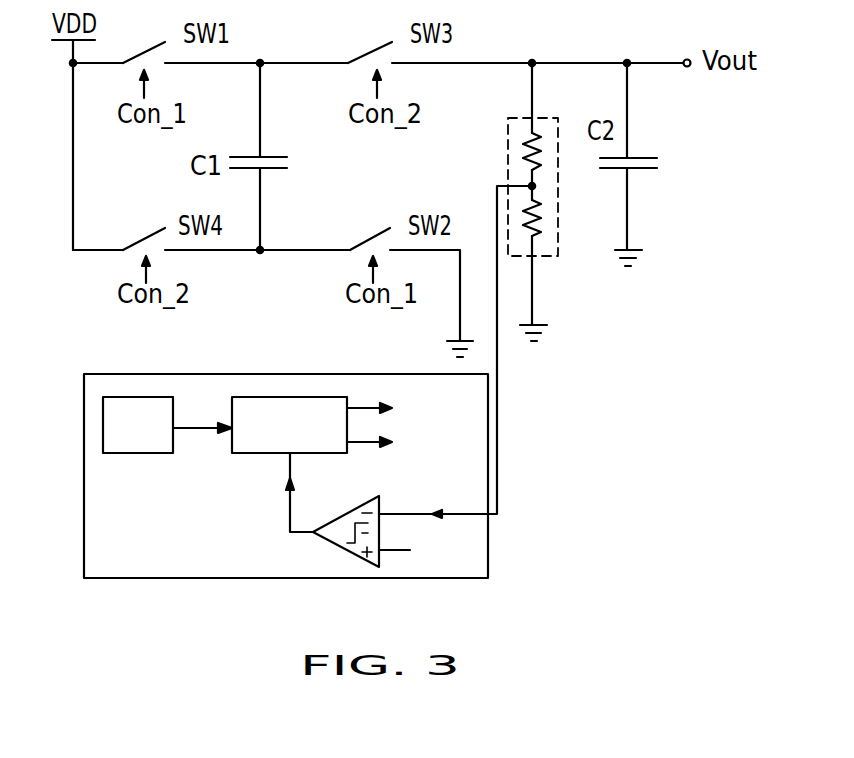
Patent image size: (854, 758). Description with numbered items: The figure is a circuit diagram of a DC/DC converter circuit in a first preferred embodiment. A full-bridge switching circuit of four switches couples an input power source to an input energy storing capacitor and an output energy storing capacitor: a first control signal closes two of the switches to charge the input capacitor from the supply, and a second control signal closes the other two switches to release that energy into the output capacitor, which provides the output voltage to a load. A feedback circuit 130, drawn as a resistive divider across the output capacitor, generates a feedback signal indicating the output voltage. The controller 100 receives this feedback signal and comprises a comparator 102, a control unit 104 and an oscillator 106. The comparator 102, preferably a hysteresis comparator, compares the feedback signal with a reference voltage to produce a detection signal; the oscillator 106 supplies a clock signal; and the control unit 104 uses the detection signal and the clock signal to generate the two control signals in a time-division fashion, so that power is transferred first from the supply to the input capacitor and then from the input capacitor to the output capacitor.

The controller 100 is at (100, 562).
The comparator 102 is at (327, 533).
The control unit 104 is at (253, 455).
The oscillator 106 is at (153, 455).
The feedback circuit 130 is at (513, 153).